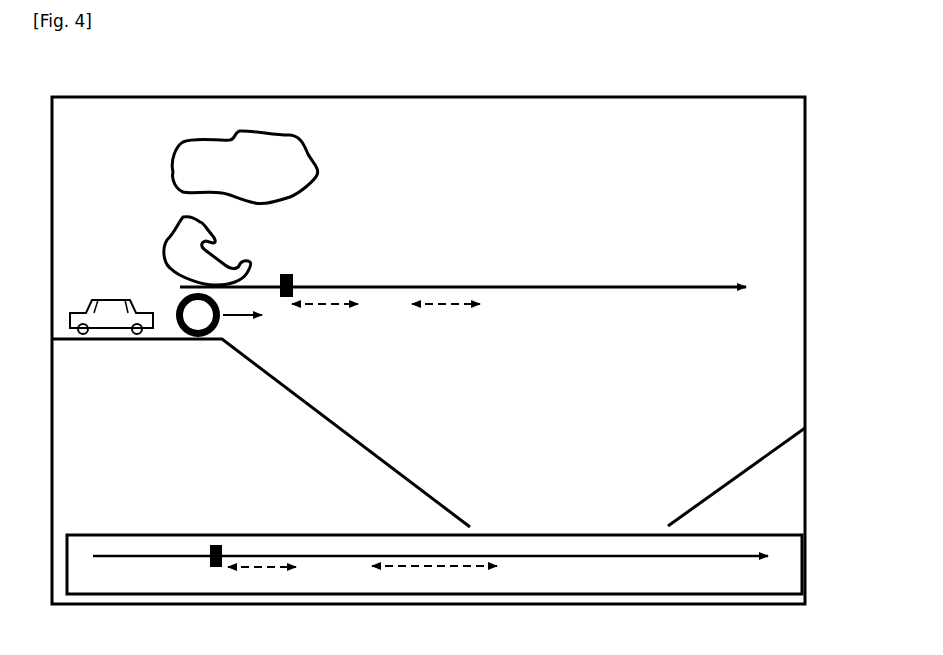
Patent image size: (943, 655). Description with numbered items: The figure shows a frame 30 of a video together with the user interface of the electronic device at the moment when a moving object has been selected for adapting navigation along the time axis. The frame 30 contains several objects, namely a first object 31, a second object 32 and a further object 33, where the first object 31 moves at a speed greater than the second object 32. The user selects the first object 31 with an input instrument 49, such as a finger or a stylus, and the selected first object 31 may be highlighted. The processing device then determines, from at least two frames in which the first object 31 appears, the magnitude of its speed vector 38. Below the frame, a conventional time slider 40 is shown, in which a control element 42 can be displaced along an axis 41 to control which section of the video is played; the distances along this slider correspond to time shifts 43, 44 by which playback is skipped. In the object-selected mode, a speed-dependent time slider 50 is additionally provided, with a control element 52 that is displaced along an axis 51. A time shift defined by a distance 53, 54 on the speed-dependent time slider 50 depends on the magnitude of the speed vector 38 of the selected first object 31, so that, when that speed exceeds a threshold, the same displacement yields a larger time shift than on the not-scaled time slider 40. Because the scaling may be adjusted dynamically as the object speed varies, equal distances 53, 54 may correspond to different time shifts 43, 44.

The frame 30 is at (100, 96).
The first object 31 is at (178, 305).
The second object 32 is at (318, 177).
The object 33 is at (118, 300).
The speed vector 38 is at (230, 318).
The time slider 40 is at (434, 567).
The axis 41 is at (264, 556).
The control element 42 is at (218, 545).
The time shift 43 is at (263, 570).
The time shift 44 is at (405, 568).
The input instrument 49 is at (250, 262).
The speed-dependent time slider 50 is at (469, 267).
The axis 51 is at (703, 287).
The control element 52 is at (290, 274).
The distance 53 is at (312, 308).
The distance 54 is at (433, 308).